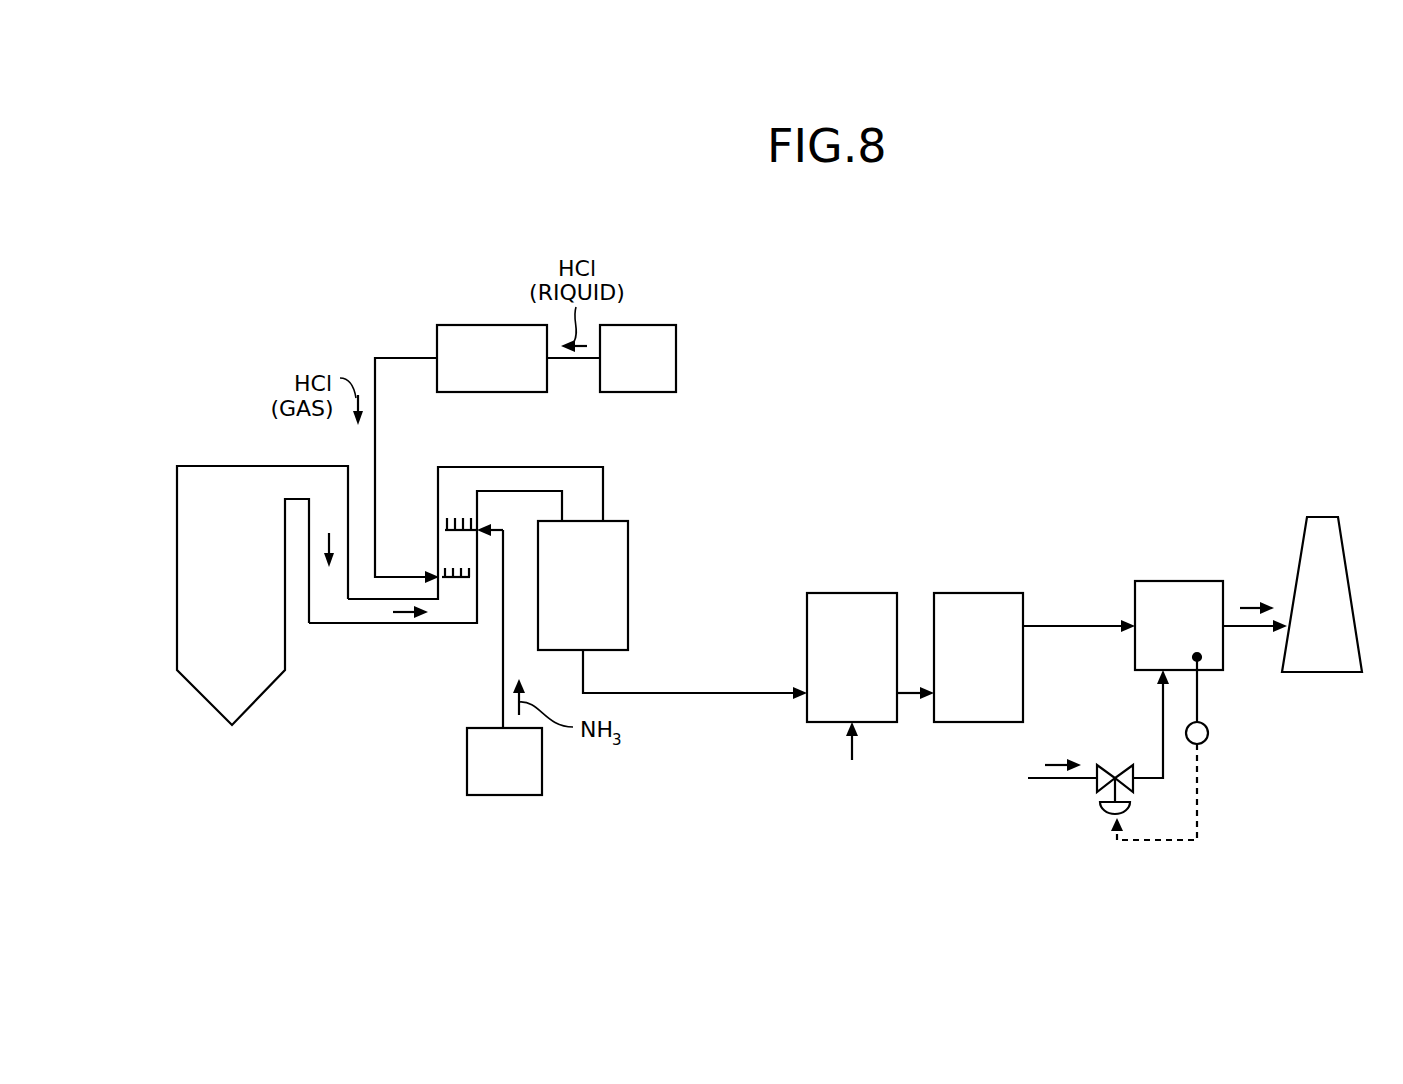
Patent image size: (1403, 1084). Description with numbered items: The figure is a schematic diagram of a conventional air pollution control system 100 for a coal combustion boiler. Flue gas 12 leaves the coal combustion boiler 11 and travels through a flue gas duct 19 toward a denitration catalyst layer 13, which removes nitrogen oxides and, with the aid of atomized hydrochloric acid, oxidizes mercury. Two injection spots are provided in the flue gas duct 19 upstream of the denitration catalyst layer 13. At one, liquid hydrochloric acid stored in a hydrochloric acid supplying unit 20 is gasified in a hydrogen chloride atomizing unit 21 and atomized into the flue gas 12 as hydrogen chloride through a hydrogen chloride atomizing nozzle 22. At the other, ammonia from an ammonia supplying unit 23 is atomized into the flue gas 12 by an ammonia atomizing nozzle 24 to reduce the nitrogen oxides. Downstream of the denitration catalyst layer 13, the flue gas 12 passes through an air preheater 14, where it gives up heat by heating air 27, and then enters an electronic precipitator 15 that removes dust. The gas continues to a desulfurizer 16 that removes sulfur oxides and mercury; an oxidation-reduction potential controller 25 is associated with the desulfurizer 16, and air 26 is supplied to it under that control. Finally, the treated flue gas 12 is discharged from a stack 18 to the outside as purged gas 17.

The air pollution control system 100 is at (340, 247).
The coal combustion boiler 11 is at (230, 466).
The flue gas 12 is at (413, 623).
The denitration catalyst layer 13 is at (628, 575).
The air preheater 14 is at (868, 592).
The electronic precipitator 15 is at (987, 592).
The desulfurizer 16 is at (1180, 580).
The purged gas 17 is at (1250, 602).
The stack 18 is at (1321, 515).
The flue gas duct 19 is at (333, 626).
The hydrochloric acid supplying unit 20 is at (661, 325).
The hydrogen chloride atomizing unit 21 is at (464, 325).
The hydrogen chloride atomizing nozzle 22 is at (442, 572).
The ammonia supplying unit 23 is at (505, 797).
The ammonia atomizing nozzle 24 is at (445, 525).
The oxidation-reduction potential controller 25 is at (1208, 733).
The air 26 is at (1060, 760).
The air 27 is at (850, 744).